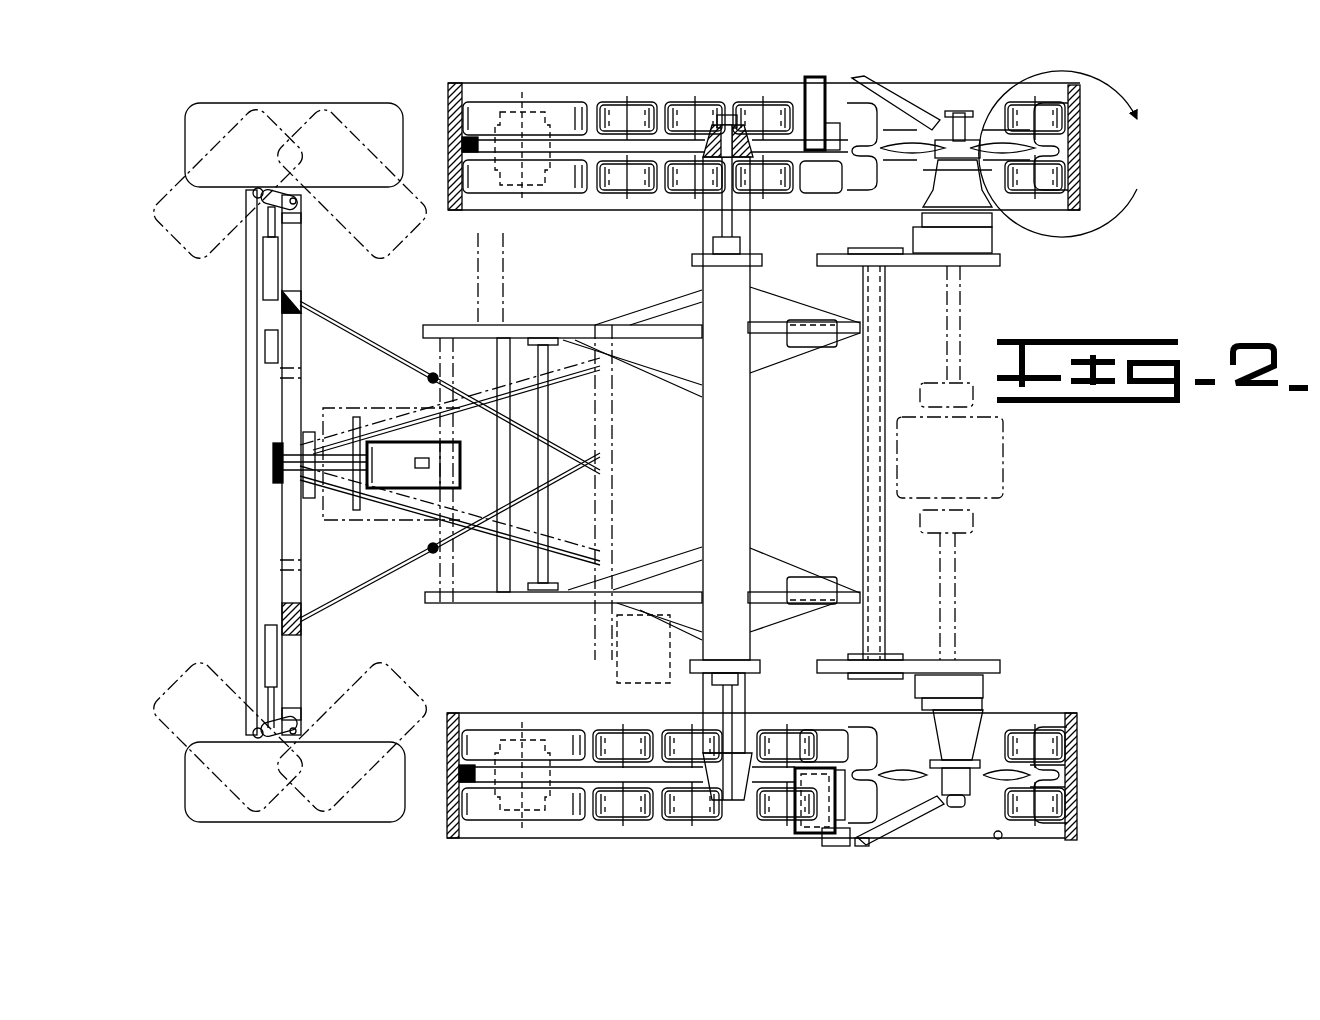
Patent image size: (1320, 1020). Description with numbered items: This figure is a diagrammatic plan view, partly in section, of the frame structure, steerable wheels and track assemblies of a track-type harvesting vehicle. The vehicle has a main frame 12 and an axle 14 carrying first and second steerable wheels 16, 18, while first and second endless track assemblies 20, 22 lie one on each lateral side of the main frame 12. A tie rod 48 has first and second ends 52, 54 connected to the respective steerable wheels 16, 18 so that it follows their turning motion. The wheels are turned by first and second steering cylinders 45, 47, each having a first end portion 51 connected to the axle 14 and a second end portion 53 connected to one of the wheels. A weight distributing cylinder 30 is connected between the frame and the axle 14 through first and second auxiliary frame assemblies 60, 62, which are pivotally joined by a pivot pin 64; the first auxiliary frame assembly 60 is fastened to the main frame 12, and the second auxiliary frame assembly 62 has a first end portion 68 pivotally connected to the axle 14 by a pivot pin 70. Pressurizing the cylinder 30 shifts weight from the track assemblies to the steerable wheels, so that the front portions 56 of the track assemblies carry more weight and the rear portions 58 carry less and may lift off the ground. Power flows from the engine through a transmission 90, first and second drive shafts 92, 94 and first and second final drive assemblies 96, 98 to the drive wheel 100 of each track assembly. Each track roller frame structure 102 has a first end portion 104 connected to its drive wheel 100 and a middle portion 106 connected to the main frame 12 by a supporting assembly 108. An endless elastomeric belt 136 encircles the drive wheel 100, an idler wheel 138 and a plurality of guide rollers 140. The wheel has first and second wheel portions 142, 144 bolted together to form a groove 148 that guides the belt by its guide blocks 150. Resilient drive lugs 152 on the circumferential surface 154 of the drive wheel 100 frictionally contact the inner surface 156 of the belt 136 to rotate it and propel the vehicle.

The main frame 12 is at (435, 352).
The axle 14 is at (303, 250).
The first steerable wheel 16 is at (190, 806).
The second steerable wheel 18 is at (190, 122).
The first endless track assembly 20 is at (668, 840).
The second endless track assembly 22 is at (742, 80).
The weight distributing cylinder 30 is at (400, 480).
The first steering cylinder 45 is at (266, 655).
The second steering cylinder 47 is at (265, 260).
The tie rod 48 is at (246, 426).
The first end portion 51 is at (284, 305).
The first end 52 is at (270, 732).
The second end portion 53 is at (262, 200).
The second end 54 is at (266, 196).
The front portion 56 is at (1072, 712).
The rear portion 58 is at (482, 88).
The first auxiliary frame assembly 60 is at (500, 600).
The second auxiliary frame assembly 62 is at (470, 554).
The pivot pin 64 is at (556, 336).
The first end portion 68 is at (308, 436).
The pivot pin 70 is at (275, 476).
The transmission 90 is at (1005, 460).
The first drive shaft 92 is at (960, 592).
The second drive shaft 94 is at (975, 310).
The first final drive assembly 96 is at (985, 688).
The second final drive assembly 98 is at (993, 240).
The drive wheel 100 is at (900, 190).
The track roller frame structure 102 is at (862, 80).
The first end portion 104 is at (960, 110).
The middle portion 106 is at (708, 140).
The supporting assembly 108 is at (755, 236).
The endless elastomeric belt 136 is at (450, 90).
The idler wheel 138 is at (545, 735).
The guide rollers 140 is at (605, 818).
The first wheel portion 142 is at (864, 740).
The second wheel portion 144 is at (838, 847).
The groove 148 is at (818, 800).
The guide blocks 150 is at (497, 772).
The resilient drive lugs 152 is at (1063, 745).
The circumferential surface 154 is at (870, 750).
The inner surface 156 is at (1045, 840).